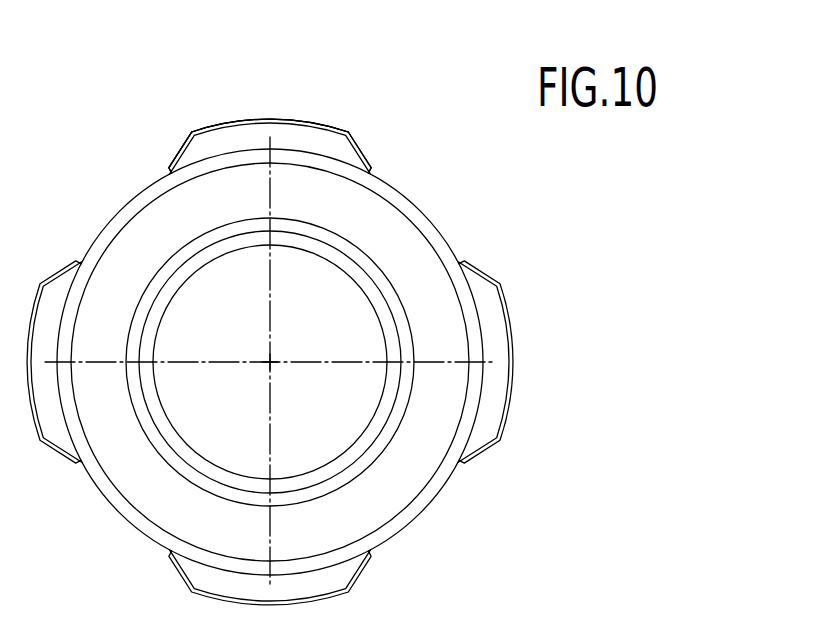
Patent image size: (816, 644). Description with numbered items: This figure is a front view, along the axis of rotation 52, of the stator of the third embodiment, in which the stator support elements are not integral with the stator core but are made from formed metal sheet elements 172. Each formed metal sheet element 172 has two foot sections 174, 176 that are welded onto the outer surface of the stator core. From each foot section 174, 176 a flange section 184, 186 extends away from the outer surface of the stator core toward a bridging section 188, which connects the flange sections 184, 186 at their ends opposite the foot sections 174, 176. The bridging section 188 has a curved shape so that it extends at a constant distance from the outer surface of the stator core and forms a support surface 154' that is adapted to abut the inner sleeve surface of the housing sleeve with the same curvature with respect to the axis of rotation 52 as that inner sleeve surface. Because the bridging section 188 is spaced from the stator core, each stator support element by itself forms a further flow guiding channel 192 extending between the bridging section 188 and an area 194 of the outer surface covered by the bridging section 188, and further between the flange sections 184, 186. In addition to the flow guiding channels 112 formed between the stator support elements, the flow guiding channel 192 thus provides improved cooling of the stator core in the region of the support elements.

The flow guiding channel 112 is at (114, 211).
The formed metal sheet element 172 is at (298, 118).
The further flow guiding channel 192 is at (312, 138).
The bridging section 188 is at (257, 119).
The support surface 154' is at (311, 92).
The flange section 184 is at (182, 147).
The flange section 186 is at (362, 141).
The foot section 174 is at (172, 166).
The foot section 176 is at (372, 168).
The area of outer surface 194 is at (219, 153).
The axis of rotation 52 is at (270, 362).